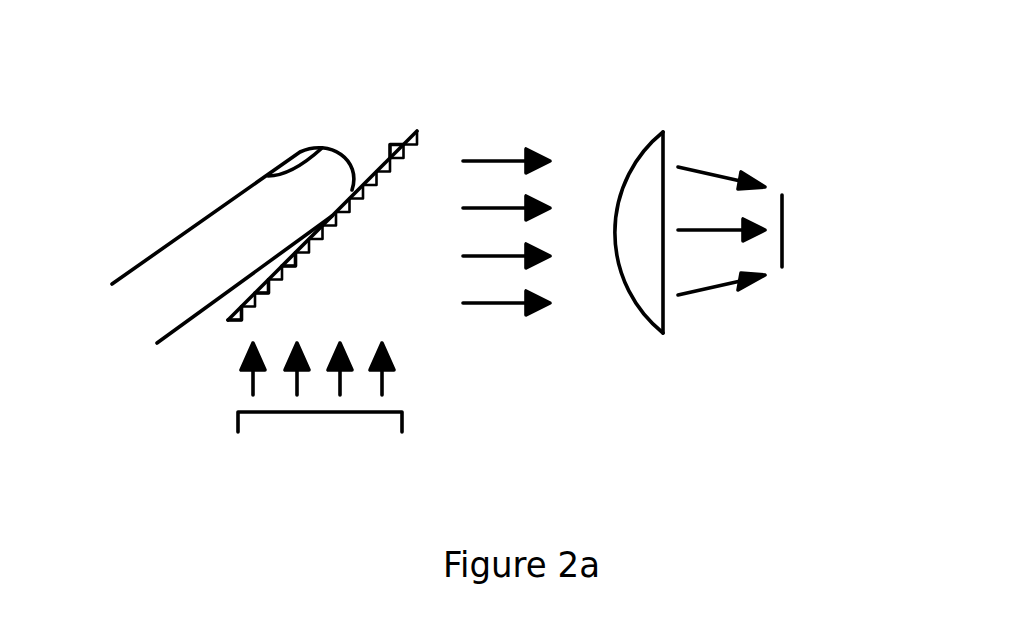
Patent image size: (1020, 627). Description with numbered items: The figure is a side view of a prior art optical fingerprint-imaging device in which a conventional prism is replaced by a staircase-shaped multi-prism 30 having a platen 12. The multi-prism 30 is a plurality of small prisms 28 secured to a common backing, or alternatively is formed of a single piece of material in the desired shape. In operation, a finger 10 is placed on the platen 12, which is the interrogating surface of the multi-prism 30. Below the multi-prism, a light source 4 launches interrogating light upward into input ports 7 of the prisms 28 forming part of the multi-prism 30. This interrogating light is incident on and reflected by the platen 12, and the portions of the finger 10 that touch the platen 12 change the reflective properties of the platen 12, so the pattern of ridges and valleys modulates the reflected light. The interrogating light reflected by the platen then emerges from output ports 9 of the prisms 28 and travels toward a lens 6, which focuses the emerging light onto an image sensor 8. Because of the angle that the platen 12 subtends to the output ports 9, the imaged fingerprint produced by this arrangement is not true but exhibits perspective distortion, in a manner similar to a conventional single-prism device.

The finger 10 is at (177, 236).
The platen 12 is at (372, 176).
The multi-prism 30 is at (428, 114).
The prisms 28 is at (380, 170).
The output ports 9 is at (297, 254).
The input ports 7 is at (278, 276).
The light source 4 is at (402, 414).
The lens 6 is at (663, 130).
The image sensor 8 is at (783, 257).